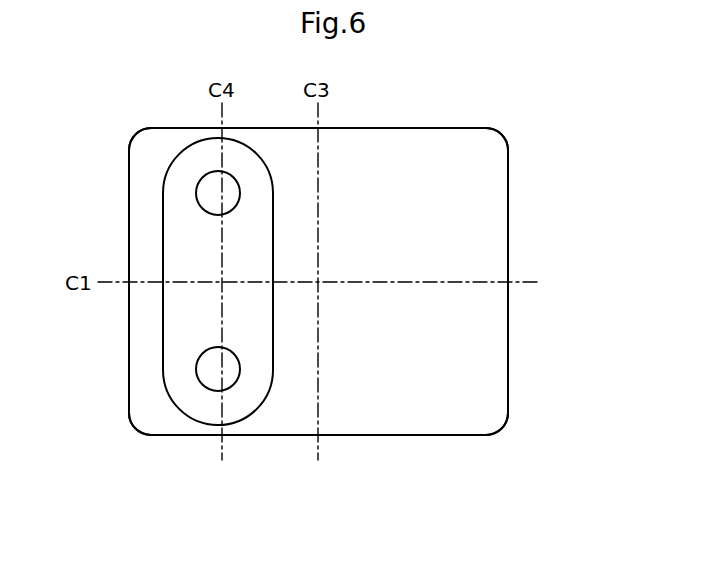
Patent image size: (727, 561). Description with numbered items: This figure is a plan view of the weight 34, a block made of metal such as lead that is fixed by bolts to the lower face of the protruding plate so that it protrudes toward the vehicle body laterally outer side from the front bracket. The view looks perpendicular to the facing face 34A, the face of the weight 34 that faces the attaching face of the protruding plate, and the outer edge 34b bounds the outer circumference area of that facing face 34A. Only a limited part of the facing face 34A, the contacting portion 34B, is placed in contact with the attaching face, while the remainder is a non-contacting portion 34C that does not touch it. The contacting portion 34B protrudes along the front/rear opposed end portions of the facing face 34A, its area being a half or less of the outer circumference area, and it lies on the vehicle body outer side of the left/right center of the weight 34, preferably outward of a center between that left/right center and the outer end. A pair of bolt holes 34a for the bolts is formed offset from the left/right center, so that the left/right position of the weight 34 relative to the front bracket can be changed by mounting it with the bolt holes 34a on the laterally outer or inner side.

The weight 34 is at (430, 125).
The facing face 34A is at (318, 281).
The contacting portion 34B is at (173, 200).
The non-contacting portion 34C is at (480, 203).
The bolt holes 34a is at (234, 195).
The outer edge 34b is at (410, 437).